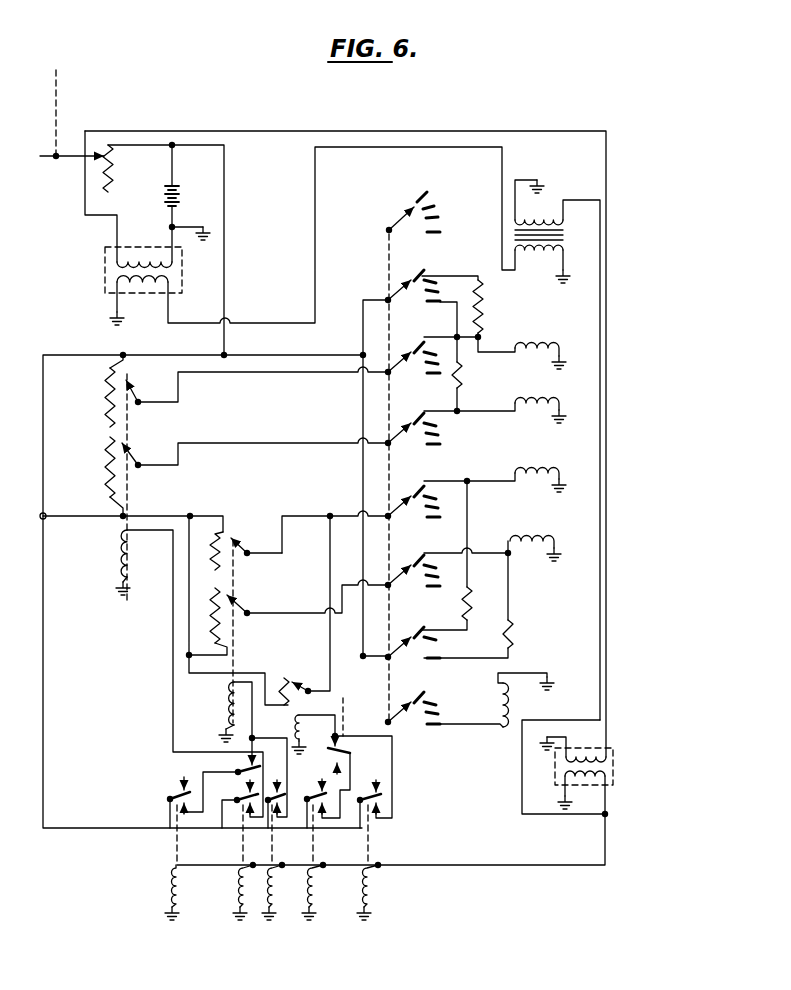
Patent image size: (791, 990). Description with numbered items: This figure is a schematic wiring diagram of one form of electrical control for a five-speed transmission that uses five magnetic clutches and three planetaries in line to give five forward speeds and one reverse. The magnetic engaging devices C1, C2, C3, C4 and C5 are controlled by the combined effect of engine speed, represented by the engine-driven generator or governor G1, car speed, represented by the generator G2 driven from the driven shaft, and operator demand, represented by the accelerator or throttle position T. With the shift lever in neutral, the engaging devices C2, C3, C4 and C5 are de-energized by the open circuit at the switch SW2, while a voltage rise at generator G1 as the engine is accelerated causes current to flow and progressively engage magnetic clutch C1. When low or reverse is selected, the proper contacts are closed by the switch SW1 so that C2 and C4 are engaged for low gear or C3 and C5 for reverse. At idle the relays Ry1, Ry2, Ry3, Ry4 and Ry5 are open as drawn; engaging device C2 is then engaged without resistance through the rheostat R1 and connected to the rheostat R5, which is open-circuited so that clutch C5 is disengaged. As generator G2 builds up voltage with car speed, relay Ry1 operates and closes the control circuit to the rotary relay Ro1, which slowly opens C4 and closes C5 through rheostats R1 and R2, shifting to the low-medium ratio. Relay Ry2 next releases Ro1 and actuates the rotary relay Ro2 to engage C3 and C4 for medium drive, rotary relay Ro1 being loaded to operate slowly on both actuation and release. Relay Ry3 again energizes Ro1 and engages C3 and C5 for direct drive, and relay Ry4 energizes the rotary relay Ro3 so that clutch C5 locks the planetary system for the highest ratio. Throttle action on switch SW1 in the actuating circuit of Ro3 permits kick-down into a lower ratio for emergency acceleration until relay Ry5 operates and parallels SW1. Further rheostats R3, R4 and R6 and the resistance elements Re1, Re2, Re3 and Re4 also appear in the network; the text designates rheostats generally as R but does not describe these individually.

The throttle position T is at (87, 124).
The accelerator rheostat R6 is at (118, 168).
The generator G1 is at (121, 286).
The potentiometer R3 is at (225, 397).
The potentiometer R4 is at (225, 467).
The rotary relay Ro2 is at (102, 562).
The rheostat R1 is at (238, 551).
The rheostat R2 is at (291, 611).
The rheostat R5 is at (290, 676).
The rotary relay Ro1 is at (223, 728).
The rotary relay Ro3 is at (299, 726).
The switch SW1 is at (357, 777).
The switch SW2 is at (420, 454).
The relay Ry1 is at (172, 865).
The relay Ry2 is at (239, 866).
The relay Ry3 is at (271, 866).
The relay Ry4 is at (311, 866).
The relay Ry5 is at (367, 866).
The resistor Re1 is at (491, 306).
The resistor Re2 is at (470, 375).
The resistor Re3 is at (479, 603).
The resistor Re4 is at (524, 634).
The magnetic clutch C1 is at (557, 450).
The magnetic engaging device C2 is at (549, 353).
The magnetic engaging device C3 is at (549, 409).
The magnetic engaging device C4 is at (548, 479).
The magnetic clutch C5 is at (544, 546).
The generator G2 is at (567, 768).